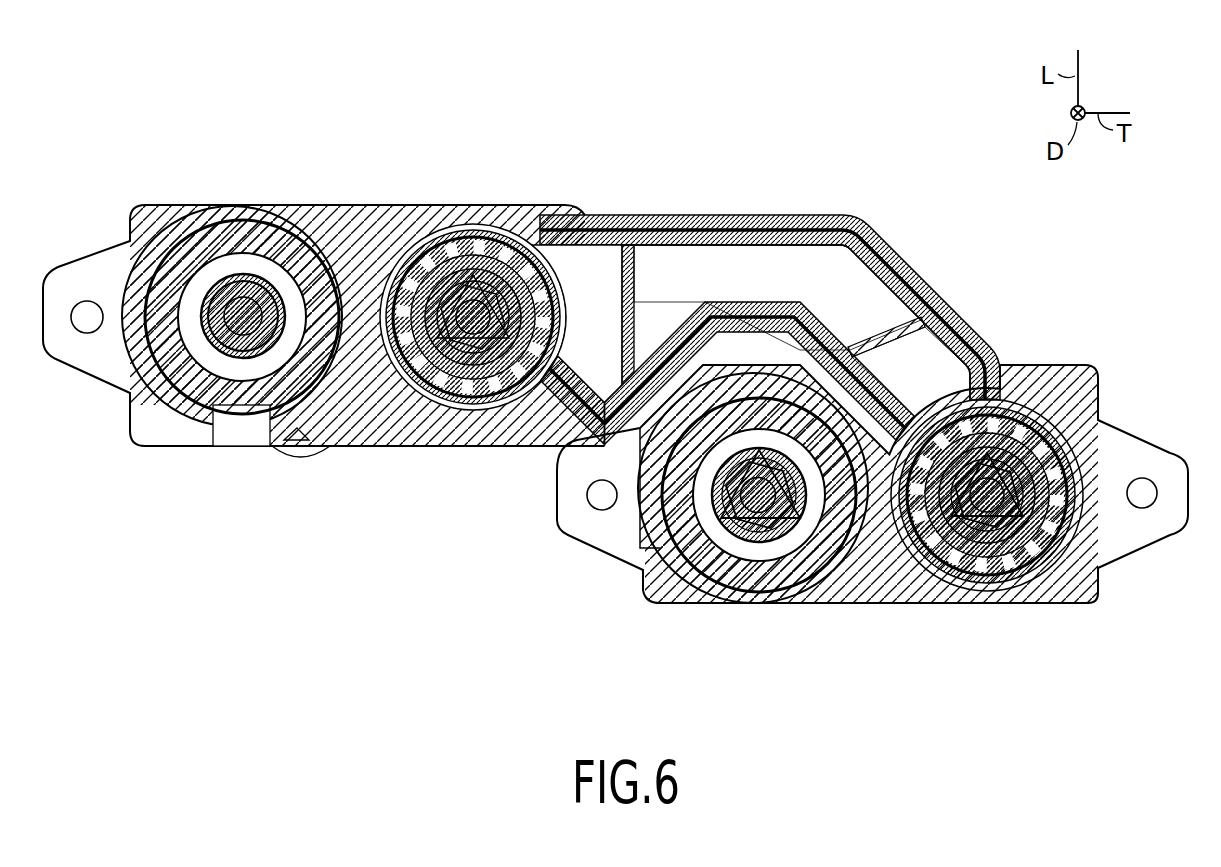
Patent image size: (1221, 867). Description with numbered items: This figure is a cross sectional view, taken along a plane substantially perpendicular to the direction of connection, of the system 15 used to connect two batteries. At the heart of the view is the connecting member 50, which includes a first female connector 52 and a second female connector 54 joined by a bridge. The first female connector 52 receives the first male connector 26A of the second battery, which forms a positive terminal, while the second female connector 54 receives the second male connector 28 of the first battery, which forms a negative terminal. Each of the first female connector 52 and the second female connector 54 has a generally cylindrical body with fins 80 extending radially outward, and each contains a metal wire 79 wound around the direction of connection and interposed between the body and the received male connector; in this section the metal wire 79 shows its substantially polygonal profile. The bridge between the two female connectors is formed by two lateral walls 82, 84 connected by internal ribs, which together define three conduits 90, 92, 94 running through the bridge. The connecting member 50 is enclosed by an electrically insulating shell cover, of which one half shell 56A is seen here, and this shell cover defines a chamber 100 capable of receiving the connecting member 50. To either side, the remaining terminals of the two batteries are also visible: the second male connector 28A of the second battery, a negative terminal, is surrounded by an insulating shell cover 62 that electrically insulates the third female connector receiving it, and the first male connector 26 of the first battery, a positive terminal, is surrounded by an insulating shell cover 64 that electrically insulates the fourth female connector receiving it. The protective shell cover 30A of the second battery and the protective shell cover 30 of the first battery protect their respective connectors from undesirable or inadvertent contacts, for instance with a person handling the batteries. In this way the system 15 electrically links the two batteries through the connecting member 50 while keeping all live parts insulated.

The system 15 is at (284, 112).
The insulating shell cover 62 is at (232, 232).
The protective shell cover 30A is at (310, 232).
The first male connector 26A is at (458, 260).
The first female connector 52 is at (483, 290).
The conduit 90 is at (598, 272).
The half shell 56A is at (668, 225).
The lateral wall 82 is at (707, 224).
The connecting member 50 is at (783, 222).
The chamber 100 is at (853, 300).
The lateral wall 84 is at (690, 323).
The conduit 92 is at (753, 287).
The conduit 94 is at (919, 385).
The second male connector 28 is at (1047, 457).
The protective shell cover 30 is at (1133, 457).
The fins 80 is at (500, 380).
The second male connector 28A is at (245, 343).
The metal wire 79 is at (405, 395).
The first male connector 26 is at (752, 520).
The insulating shell cover 64 is at (773, 570).
The second female connector 54 is at (1003, 565).